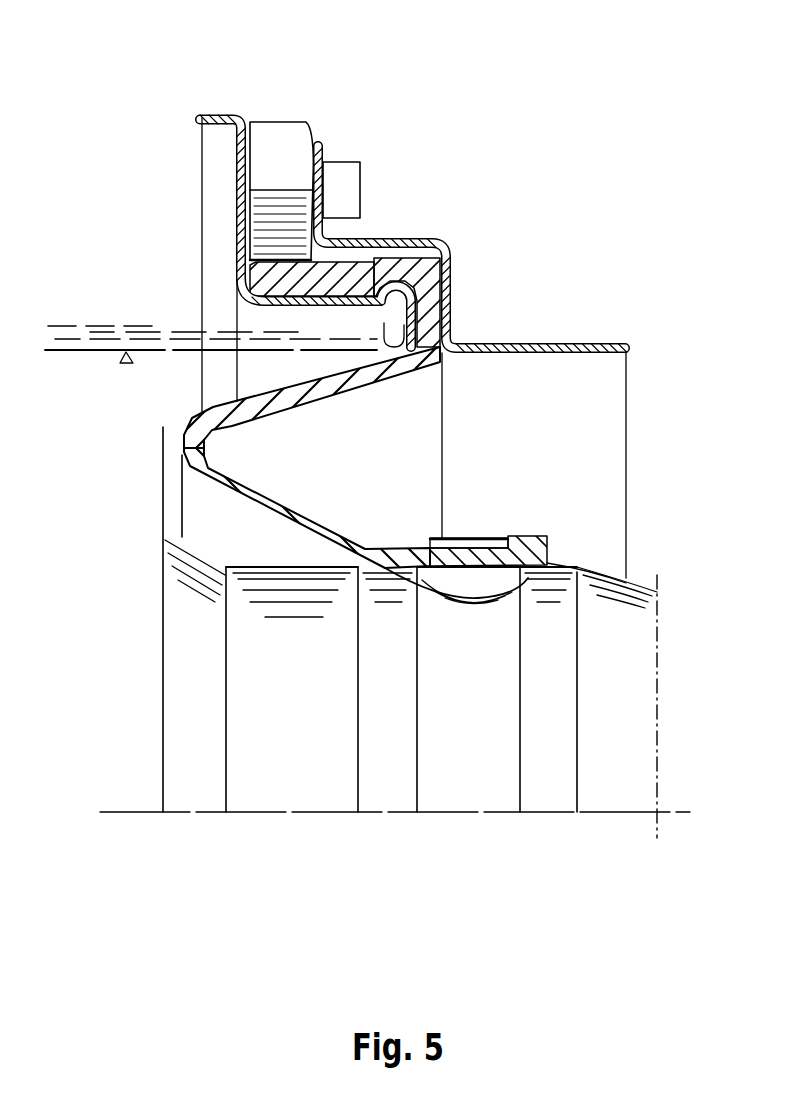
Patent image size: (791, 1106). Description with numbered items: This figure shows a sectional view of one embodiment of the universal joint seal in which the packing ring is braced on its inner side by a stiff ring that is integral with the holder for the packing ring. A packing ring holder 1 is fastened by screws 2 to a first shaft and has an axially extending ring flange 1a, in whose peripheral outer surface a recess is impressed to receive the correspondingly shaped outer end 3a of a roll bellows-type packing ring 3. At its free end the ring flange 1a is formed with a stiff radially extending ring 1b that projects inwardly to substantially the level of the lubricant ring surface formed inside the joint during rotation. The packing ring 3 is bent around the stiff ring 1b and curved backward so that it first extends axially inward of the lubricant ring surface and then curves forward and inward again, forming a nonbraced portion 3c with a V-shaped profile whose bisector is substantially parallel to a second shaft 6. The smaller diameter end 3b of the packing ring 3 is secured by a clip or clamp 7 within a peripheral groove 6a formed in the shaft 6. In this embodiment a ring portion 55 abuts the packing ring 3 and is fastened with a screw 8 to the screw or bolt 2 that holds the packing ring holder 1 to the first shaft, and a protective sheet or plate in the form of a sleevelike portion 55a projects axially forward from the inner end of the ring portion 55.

The packing ring holder 1 is at (208, 119).
The ring flange 1a is at (300, 306).
The stiff ring 1b is at (430, 300).
The screw 2 is at (285, 130).
The packing ring 3 is at (397, 263).
The outer end of packing ring 3a is at (275, 285).
The smaller diameter end of packing ring 3b is at (543, 540).
The nonbraced portion 3c is at (268, 415).
The shaft 6 is at (447, 535).
The peripheral groove 6a is at (598, 577).
The clip or clamp 7 is at (480, 538).
The screw 8 is at (348, 165).
The ring portion 55 is at (447, 290).
The sleevelike portion 55a is at (580, 347).